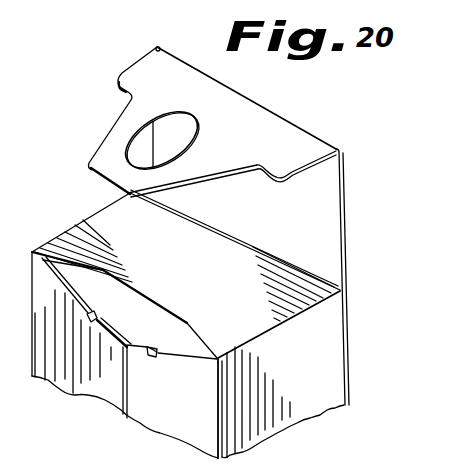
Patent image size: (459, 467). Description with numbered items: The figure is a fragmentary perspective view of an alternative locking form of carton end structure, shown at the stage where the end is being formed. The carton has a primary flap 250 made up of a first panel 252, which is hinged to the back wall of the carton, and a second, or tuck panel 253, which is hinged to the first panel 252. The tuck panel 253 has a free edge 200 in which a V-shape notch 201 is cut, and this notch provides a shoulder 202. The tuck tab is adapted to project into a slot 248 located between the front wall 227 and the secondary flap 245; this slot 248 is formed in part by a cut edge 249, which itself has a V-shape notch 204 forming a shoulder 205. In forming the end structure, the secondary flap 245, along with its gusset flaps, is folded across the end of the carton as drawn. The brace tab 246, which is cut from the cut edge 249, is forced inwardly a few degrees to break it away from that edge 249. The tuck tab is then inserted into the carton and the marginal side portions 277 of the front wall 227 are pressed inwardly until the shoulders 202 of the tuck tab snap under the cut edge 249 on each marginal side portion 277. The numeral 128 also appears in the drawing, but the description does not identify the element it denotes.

The block body portion 128 is at (322, 405).
The free edge 200 is at (202, 187).
The V-shape notch 201 is at (258, 169).
The shoulder 202 is at (272, 168).
The V-shape notch 204 is at (149, 357).
The shoulder 205 is at (150, 347).
The front wall 227 is at (113, 405).
The secondary flap 245 is at (186, 274).
The brace tab 246 is at (141, 310).
The slot 248 is at (88, 317).
The cut edge 249 is at (185, 356).
The primary flap 250 is at (358, 209).
The first panel 252 is at (328, 233).
The tuck panel 253 is at (212, 142).
The marginal side portions 277 is at (77, 390).